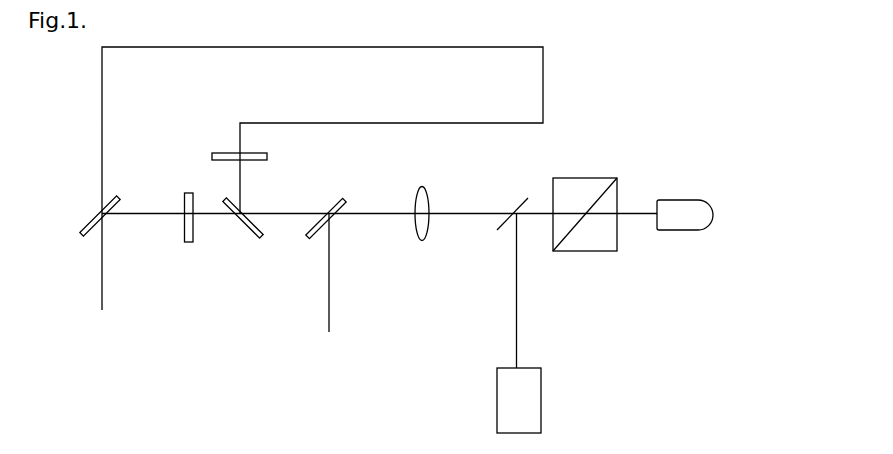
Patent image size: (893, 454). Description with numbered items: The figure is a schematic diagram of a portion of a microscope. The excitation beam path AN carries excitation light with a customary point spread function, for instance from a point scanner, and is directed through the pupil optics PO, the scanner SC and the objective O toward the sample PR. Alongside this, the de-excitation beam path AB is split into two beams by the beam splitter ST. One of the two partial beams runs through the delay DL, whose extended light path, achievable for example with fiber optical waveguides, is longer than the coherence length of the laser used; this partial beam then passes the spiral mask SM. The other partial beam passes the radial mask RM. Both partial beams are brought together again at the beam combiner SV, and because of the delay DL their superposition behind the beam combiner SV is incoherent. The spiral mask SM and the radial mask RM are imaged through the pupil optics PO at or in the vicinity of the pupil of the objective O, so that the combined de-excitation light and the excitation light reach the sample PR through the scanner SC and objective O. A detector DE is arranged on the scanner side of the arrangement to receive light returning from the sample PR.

The delay DL is at (322, 114).
The de-excitation beam path AB is at (85, 287).
The beam splitter ST is at (75, 213).
The radial mask RM is at (171, 235).
The spiral mask SM is at (258, 153).
The beam combiner SV is at (243, 237).
The excitation beam path AN is at (311, 283).
The pupil optics PO is at (403, 234).
The scanner SC is at (580, 198).
The objective O is at (680, 197).
The sample PR is at (752, 216).
The detector DE is at (539, 323).